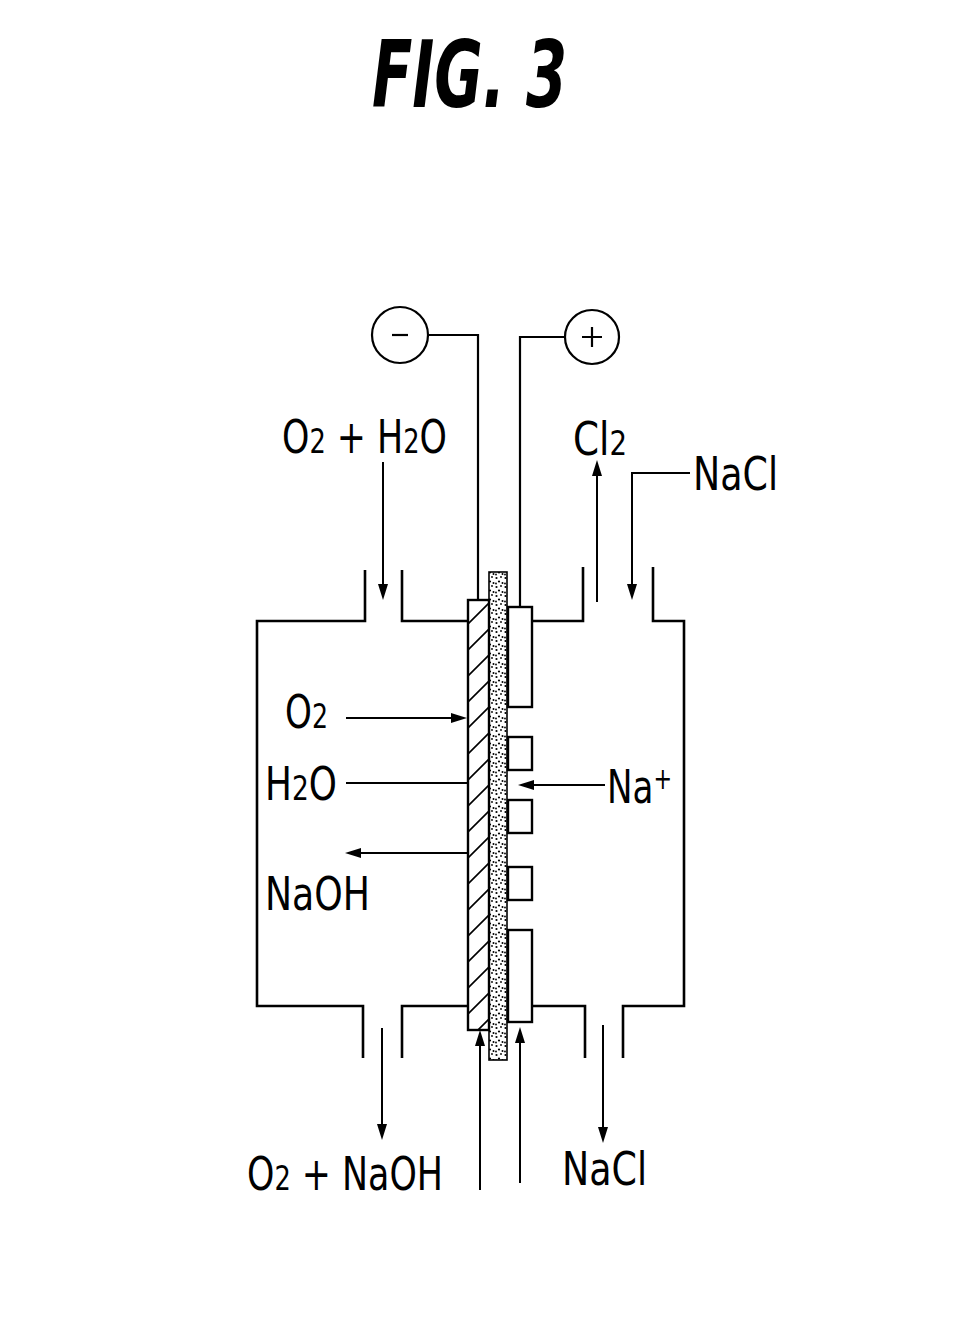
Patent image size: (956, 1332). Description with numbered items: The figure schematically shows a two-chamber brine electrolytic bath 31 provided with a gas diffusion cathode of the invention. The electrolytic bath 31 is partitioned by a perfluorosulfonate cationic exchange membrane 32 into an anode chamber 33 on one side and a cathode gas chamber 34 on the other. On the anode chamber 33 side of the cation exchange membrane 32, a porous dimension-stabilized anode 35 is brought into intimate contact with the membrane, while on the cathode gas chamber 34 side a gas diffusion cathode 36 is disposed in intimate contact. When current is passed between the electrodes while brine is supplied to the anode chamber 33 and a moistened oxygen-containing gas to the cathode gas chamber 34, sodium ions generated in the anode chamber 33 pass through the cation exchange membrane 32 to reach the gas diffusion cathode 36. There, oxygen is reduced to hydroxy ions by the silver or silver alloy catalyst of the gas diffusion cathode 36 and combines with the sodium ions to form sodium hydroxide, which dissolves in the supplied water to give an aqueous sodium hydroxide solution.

The two-chamber electrolytic bath 31 is at (222, 628).
The perfluorosulfonate cationic exchange membrane 32 is at (515, 713).
The anode chamber 33 is at (650, 862).
The cathode gas chamber 34 is at (283, 960).
The porous dimension-stabilized anode 35 is at (520, 950).
The gas diffusion cathode 36 is at (480, 956).